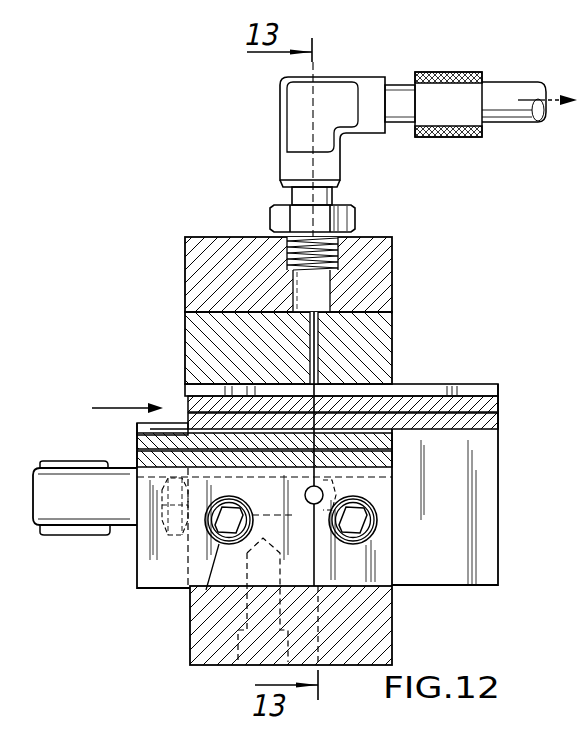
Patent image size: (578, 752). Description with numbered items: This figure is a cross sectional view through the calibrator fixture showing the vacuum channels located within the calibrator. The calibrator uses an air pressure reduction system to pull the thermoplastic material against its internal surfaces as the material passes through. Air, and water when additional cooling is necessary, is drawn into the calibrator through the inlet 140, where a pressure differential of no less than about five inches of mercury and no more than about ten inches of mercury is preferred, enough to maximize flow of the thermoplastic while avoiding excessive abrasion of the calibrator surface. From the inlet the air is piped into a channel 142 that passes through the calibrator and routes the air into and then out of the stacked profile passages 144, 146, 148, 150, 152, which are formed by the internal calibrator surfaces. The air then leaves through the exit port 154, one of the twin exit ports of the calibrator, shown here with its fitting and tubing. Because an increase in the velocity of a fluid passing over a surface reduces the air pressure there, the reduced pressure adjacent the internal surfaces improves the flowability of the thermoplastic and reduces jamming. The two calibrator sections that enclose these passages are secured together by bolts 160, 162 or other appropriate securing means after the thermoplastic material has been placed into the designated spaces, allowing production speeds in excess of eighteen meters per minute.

The inlet 140 is at (100, 482).
The channel 142 is at (323, 343).
The profile passage 144 is at (383, 467).
The profile passage 146 is at (380, 448).
The profile passage 148 is at (395, 430).
The profile passage 150 is at (493, 399).
The profile passage 152 is at (480, 388).
The exit port 154 is at (522, 86).
The bolt 160 is at (373, 532).
The bolt 162 is at (206, 590).